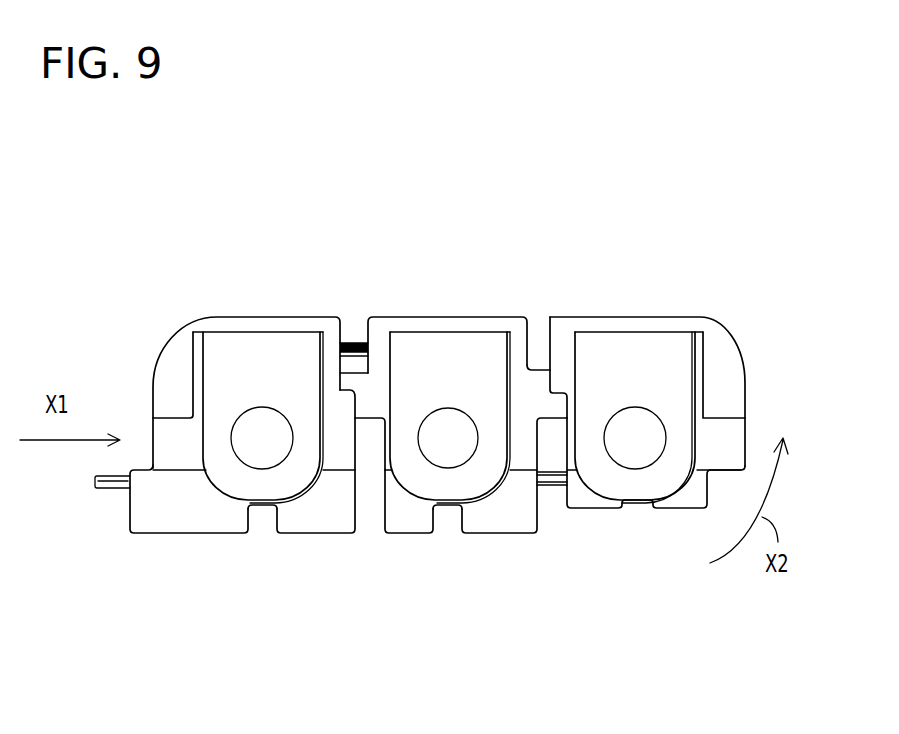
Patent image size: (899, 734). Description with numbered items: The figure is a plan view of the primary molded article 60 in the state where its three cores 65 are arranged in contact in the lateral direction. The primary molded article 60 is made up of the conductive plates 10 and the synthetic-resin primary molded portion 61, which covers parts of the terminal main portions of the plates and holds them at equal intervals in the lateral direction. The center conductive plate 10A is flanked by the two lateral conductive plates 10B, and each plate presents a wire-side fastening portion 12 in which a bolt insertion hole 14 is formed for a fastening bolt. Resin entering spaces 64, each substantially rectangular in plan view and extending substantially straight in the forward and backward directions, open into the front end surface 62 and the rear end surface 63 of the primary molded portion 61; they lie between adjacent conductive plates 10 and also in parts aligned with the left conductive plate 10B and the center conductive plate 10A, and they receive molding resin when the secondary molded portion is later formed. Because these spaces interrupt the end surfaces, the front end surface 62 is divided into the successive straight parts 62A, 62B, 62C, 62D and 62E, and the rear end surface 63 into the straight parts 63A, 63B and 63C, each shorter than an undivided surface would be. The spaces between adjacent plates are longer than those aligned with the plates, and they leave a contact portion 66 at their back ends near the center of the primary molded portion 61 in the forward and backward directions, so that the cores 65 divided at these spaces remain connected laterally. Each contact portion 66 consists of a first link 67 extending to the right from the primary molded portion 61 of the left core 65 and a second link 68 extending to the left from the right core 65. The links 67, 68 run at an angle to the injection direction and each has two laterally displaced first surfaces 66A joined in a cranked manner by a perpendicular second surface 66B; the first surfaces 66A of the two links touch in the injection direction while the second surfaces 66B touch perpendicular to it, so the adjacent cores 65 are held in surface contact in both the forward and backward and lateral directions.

The conductive plate 10 is at (408, 246).
The center conductive plate 10A is at (358, 328).
The lateral conductive plate 10B is at (100, 489).
The wire-side fastening portion 12 is at (218, 362).
The bolt insertion hole 14 is at (255, 460).
The primary molded article 60 is at (408, 652).
The primary molded portion 61 is at (170, 367).
The front end surface 62 is at (150, 536).
The straight part 62A is at (182, 536).
The straight part 62B is at (288, 536).
The straight part 62C is at (405, 536).
The straight part 62D is at (529, 536).
The straight part 62E is at (658, 510).
The rear end surface 63 is at (300, 317).
The straight part 63A is at (263, 317).
The straight part 63B is at (445, 317).
The straight part 63C is at (615, 317).
The resin entering space 64 is at (274, 519).
The core 65 is at (137, 396).
The contact portion 66 is at (373, 436).
The first surface 66A is at (555, 372).
The second surface 66B is at (203, 360).
The first link 67 is at (347, 393).
The second link 68 is at (371, 340).